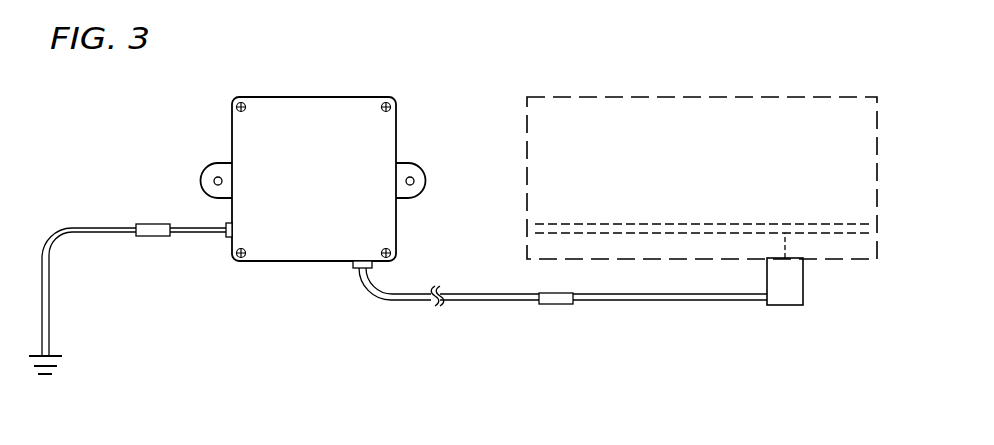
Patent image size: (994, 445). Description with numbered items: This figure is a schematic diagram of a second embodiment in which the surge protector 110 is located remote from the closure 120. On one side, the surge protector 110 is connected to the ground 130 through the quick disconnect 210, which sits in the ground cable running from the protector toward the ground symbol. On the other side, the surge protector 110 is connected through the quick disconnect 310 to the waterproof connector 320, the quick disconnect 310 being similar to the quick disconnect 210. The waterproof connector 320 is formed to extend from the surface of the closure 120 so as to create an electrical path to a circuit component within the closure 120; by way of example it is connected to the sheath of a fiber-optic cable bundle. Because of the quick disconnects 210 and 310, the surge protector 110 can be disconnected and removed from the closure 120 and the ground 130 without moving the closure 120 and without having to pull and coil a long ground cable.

The surge protector 110 is at (270, 85).
The closure 120 is at (745, 96).
The ground 130 is at (56, 353).
The quick disconnect 210 is at (153, 226).
The quick disconnect 310 is at (556, 305).
The waterproof connector 320 is at (792, 305).